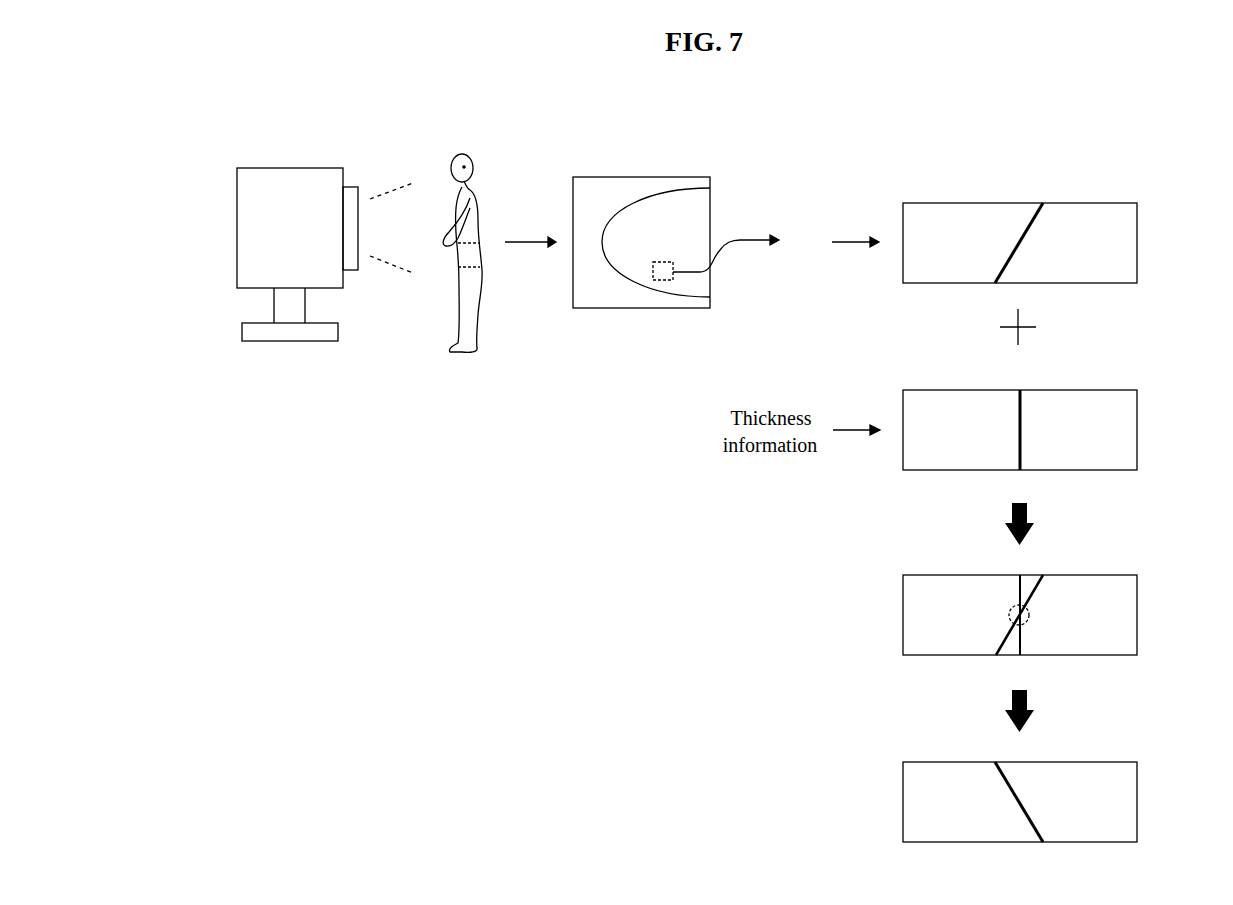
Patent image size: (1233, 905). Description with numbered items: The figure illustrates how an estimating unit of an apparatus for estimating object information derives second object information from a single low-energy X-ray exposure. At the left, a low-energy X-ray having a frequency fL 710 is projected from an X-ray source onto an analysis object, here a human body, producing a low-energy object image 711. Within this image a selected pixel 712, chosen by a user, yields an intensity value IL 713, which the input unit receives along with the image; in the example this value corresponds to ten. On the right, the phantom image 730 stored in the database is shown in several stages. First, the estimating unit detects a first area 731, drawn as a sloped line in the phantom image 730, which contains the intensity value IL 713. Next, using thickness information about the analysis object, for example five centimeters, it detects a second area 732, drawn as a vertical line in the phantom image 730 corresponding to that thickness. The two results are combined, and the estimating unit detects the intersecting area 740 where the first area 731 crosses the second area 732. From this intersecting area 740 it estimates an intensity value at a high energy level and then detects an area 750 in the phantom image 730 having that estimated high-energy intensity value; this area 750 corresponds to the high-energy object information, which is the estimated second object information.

The frequency fL of low-energy X-ray 710 is at (176, 232).
The low-energy object image 711 is at (620, 177).
The selected pixel 712 is at (662, 282).
The intensity value IL 713 is at (797, 222).
The phantom image 730 is at (1138, 243).
The first area 731 is at (1028, 226).
The second area 732 is at (1022, 405).
The intersecting area 740 is at (1030, 620).
The area having estimated high-energy intensity value 750 is at (1012, 785).